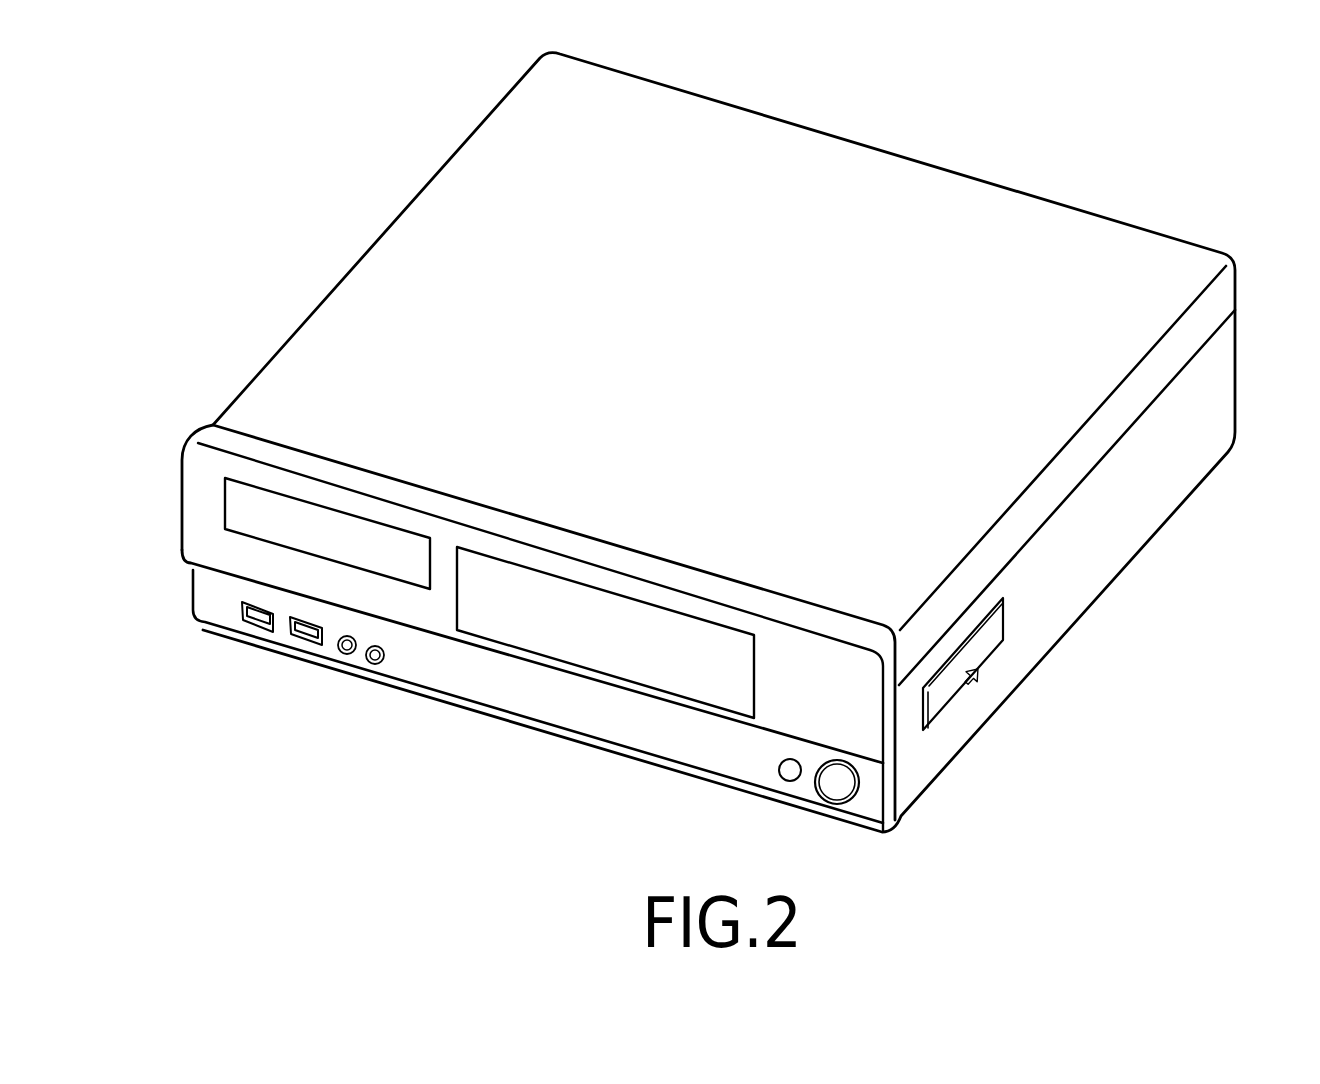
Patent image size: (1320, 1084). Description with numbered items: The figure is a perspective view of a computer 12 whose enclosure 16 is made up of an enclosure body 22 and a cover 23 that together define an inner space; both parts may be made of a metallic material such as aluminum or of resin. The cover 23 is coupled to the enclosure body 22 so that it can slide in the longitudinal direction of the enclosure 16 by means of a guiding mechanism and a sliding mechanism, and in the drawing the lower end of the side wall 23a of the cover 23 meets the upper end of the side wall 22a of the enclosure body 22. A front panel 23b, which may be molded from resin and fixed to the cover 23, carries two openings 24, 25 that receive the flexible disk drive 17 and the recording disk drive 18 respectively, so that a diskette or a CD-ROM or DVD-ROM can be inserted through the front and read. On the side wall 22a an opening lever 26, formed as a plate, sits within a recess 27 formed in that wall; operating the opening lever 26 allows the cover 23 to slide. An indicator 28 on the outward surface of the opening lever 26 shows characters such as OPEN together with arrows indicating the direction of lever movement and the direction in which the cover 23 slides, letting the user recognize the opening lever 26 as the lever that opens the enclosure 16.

The computer 12 is at (277, 212).
The enclosure 16 is at (448, 117).
The flexible disk drive 17 is at (480, 628).
The recording disk drive 18 is at (228, 514).
The enclosure body 22 is at (1235, 377).
The side wall of the enclosure body 22a is at (1080, 596).
The cover 23 is at (1235, 291).
The side wall of the cover 23a is at (1078, 455).
The front panel 23b is at (204, 553).
The opening 24 is at (747, 677).
The opening 25 is at (418, 574).
The opening lever 26 is at (963, 683).
The recess 27 is at (997, 632).
The indicator 28 is at (935, 712).